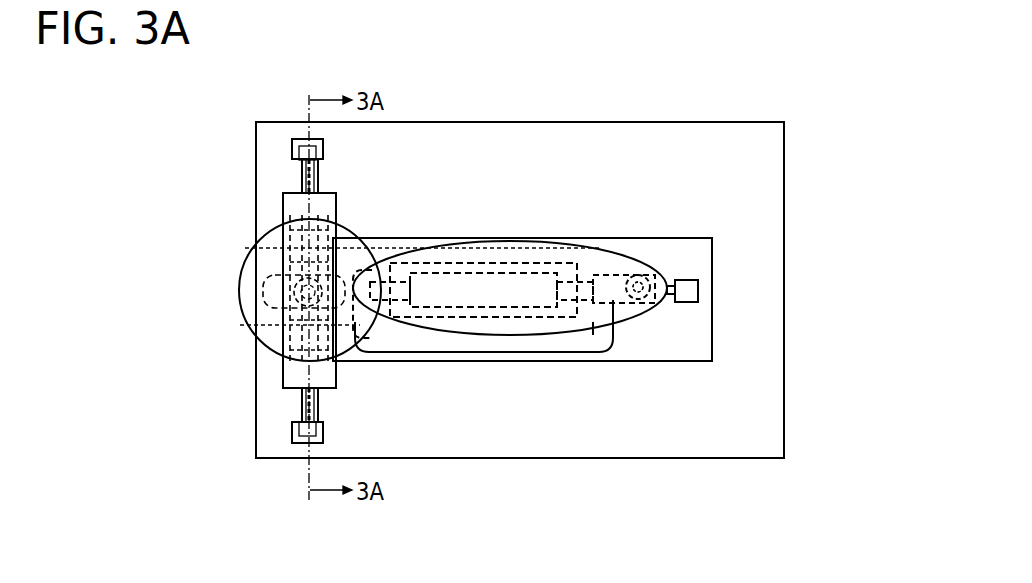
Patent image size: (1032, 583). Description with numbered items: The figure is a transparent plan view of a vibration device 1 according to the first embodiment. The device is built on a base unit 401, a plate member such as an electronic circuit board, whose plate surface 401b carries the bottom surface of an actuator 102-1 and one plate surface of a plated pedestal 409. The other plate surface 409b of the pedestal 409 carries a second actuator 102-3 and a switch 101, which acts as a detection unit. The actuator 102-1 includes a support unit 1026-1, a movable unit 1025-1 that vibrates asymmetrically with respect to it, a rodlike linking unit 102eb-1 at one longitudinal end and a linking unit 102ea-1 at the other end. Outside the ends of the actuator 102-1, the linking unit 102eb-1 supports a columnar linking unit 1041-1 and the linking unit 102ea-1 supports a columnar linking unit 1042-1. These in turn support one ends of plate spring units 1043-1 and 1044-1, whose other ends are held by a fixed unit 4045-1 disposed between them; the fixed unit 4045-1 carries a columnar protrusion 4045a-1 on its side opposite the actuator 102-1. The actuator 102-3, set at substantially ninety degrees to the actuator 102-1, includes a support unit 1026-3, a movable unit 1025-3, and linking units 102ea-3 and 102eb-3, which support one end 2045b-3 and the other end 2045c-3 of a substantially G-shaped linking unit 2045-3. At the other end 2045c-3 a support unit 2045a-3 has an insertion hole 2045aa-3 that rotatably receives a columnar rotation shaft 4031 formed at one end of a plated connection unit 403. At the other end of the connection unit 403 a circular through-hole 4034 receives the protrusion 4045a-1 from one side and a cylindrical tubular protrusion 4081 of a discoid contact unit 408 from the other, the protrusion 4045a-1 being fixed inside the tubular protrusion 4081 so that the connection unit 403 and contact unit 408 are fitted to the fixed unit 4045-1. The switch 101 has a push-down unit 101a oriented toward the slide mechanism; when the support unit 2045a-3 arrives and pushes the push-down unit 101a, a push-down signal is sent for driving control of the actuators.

The vibration device 1 is at (838, 74).
The base unit 401 is at (730, 458).
The plate surface 401b is at (728, 198).
The connection unit 403 is at (590, 361).
The through-hole 4034 is at (262, 245).
The contact unit 408 is at (283, 205).
The cylindrical tubular protrusion 4081 is at (290, 262).
The protrusion 4045a-1 is at (266, 282).
The fixed unit 4045-1 is at (300, 300).
The movable unit 1025-1 is at (290, 340).
The support unit 1026-1 is at (283, 372).
The actuator 102-1 is at (300, 398).
The linking unit 1041-1 is at (300, 140).
The linking unit 1042-1 is at (305, 443).
The plate spring unit 1043-1 is at (302, 185).
The plate spring unit 1044-1 is at (302, 412).
The linking unit 102eb-1 is at (313, 180).
The linking unit 102ea-1 is at (312, 400).
The linking unit 2045-3 is at (455, 335).
The pedestal 409 is at (413, 353).
The actuator 102-3 is at (503, 312).
The movable unit 1025-3 is at (523, 288).
The support unit 1026-3 is at (530, 262).
The linking unit 102ea-3 is at (398, 272).
The linking unit 102eb-3 is at (593, 280).
The one end 2045b-3 is at (372, 300).
The support unit 2045a-3 is at (612, 303).
The insertion hole 2045aa-3 is at (640, 275).
The other end 2045c-3 is at (648, 300).
The rotation shaft 4031 is at (650, 275).
The switch 101 is at (695, 280).
The push-down unit 101a is at (660, 300).
The plate surface 409b is at (655, 278).